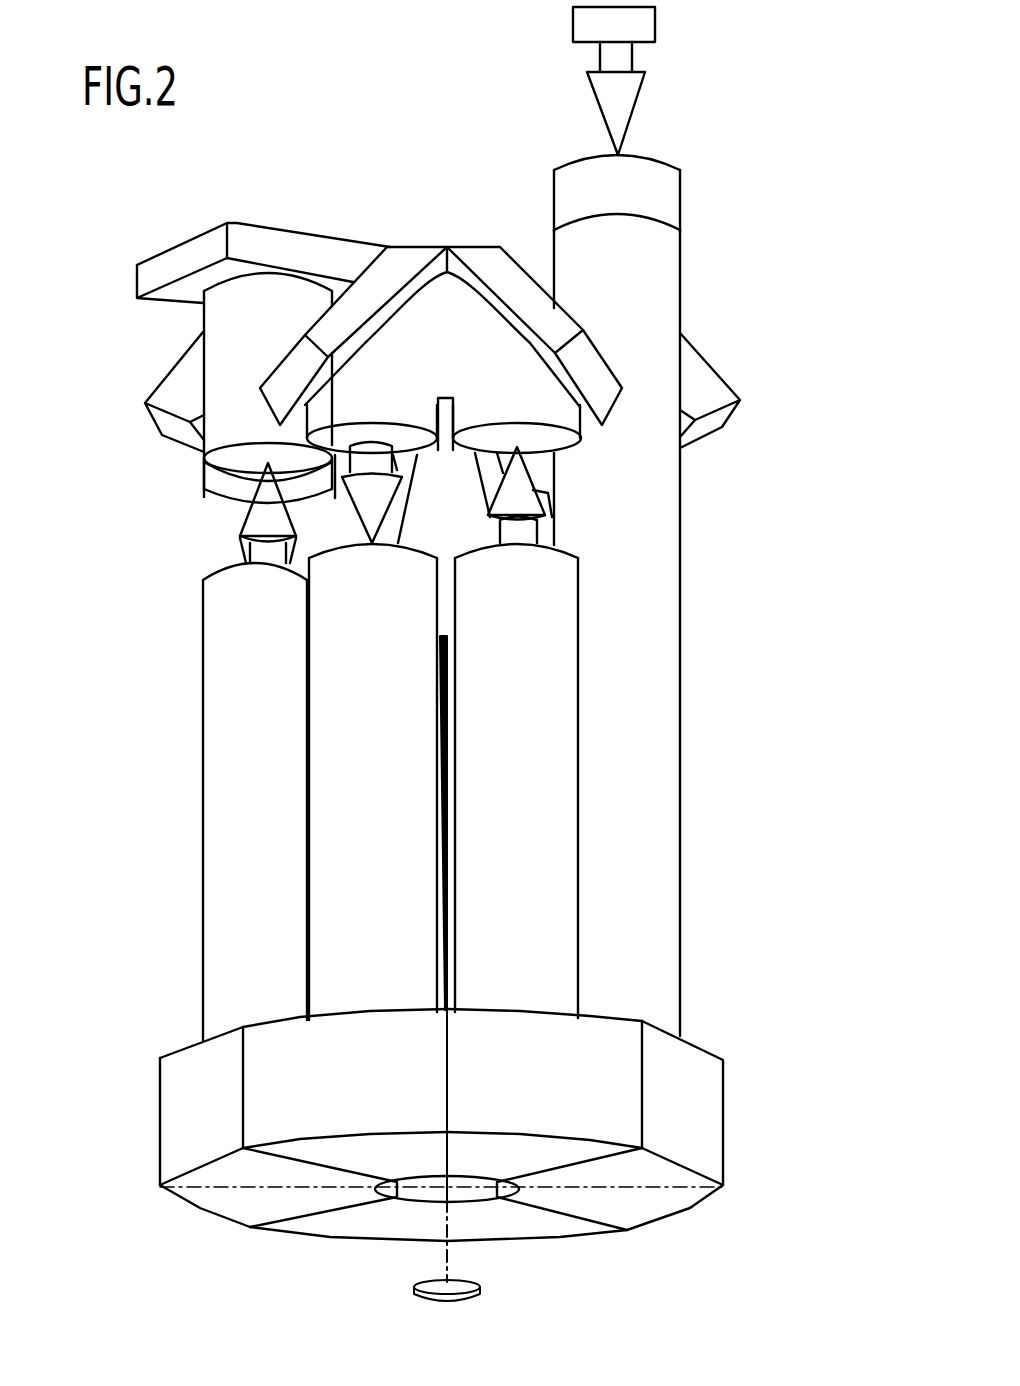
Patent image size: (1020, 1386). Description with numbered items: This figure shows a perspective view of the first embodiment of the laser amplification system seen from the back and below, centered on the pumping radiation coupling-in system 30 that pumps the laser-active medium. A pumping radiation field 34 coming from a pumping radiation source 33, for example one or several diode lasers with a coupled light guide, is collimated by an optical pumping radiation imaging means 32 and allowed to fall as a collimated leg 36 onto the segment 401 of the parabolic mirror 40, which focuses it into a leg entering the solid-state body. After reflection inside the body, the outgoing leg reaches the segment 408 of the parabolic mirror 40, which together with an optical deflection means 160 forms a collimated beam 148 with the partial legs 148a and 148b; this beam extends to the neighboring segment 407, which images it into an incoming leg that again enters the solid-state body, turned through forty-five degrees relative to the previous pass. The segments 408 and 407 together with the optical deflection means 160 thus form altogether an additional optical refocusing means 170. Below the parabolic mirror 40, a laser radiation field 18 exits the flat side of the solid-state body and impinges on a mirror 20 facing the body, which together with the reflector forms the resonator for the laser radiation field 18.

The laser radiation field 18 is at (443, 1257).
The mirror 20 is at (470, 1287).
The pumping radiation coupling-in system 30 is at (700, 652).
The optical pumping radiation imaging means 32 is at (665, 206).
The pumping radiation source 33 is at (640, 27).
The pumping radiation field 34 is at (633, 95).
The collimated leg 36 is at (645, 507).
The parabolic mirror 40 is at (735, 1113).
The segment of the parabolic mirror 401 is at (705, 1078).
The segment of the parabolic mirror 407 is at (273, 1055).
The segment of the parabolic mirror 408 is at (550, 1052).
The collimated beam 148 is at (530, 688).
The partial leg 148a is at (555, 780).
The partial leg 148b is at (350, 720).
The optical deflection means 160 is at (441, 237).
The additional optical refocusing means 170 is at (330, 639).